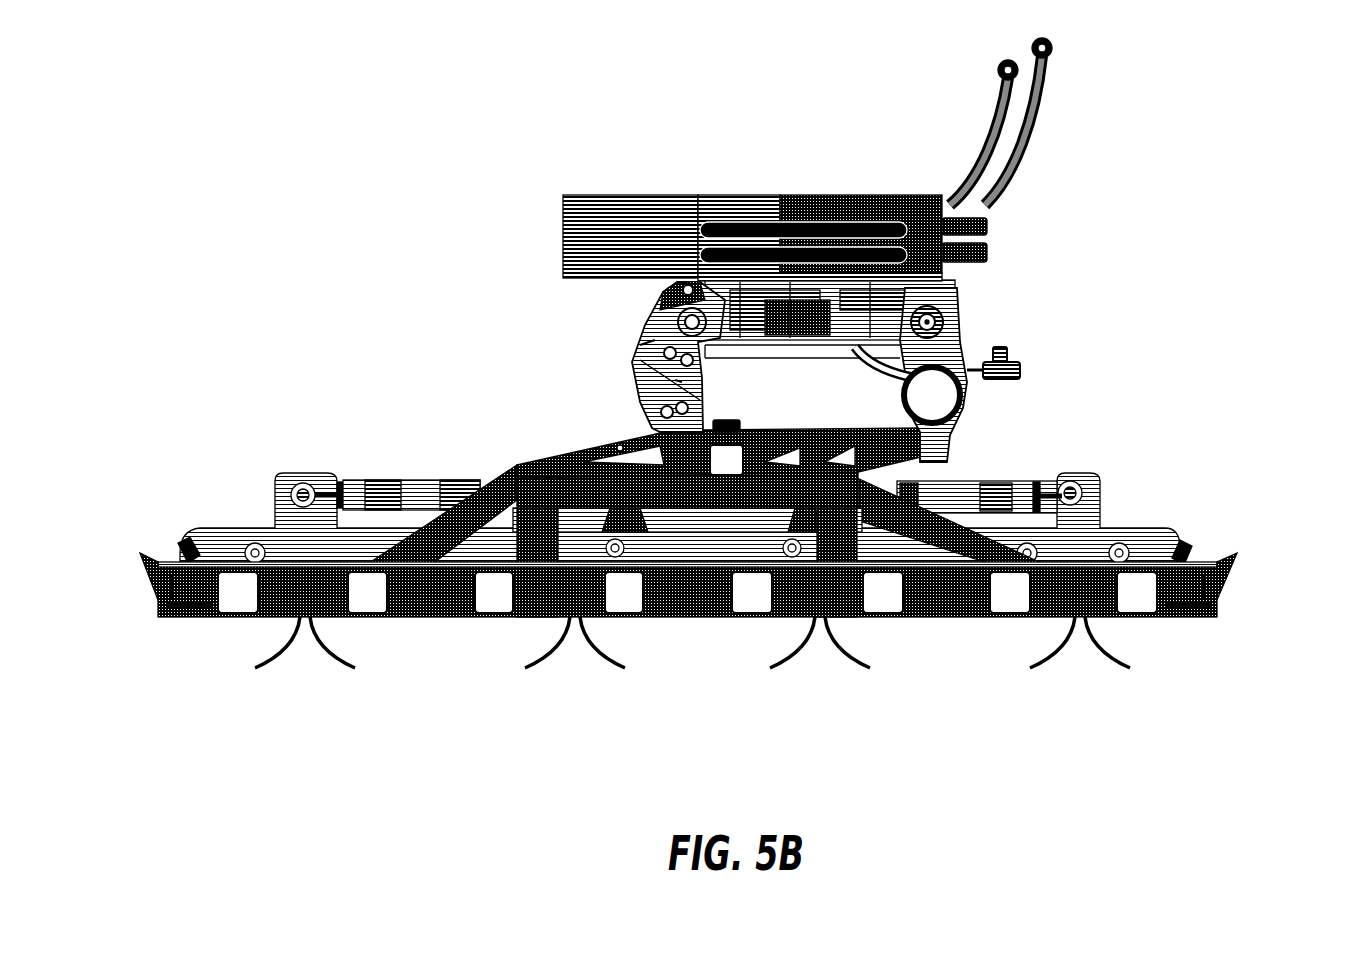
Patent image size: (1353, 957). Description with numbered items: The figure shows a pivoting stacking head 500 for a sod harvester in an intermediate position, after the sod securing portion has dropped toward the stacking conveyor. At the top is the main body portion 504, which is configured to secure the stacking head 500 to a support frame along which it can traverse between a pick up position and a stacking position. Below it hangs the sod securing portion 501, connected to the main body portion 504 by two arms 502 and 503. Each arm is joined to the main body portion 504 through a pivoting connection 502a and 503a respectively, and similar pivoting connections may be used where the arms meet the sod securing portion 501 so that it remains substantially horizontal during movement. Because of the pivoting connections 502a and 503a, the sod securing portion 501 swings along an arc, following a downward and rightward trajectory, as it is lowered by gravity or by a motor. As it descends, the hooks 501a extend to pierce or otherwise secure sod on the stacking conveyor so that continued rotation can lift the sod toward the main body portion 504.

The pivoting stacking head 500 is at (331, 180).
The sod securing portion 501 is at (1160, 617).
The hooks 501a is at (844, 674).
The arm 502 is at (631, 373).
The pivoting connection 502a is at (663, 318).
The arm 503 is at (968, 403).
The pivoting connection 503a is at (953, 318).
The main body portion 504 is at (962, 291).